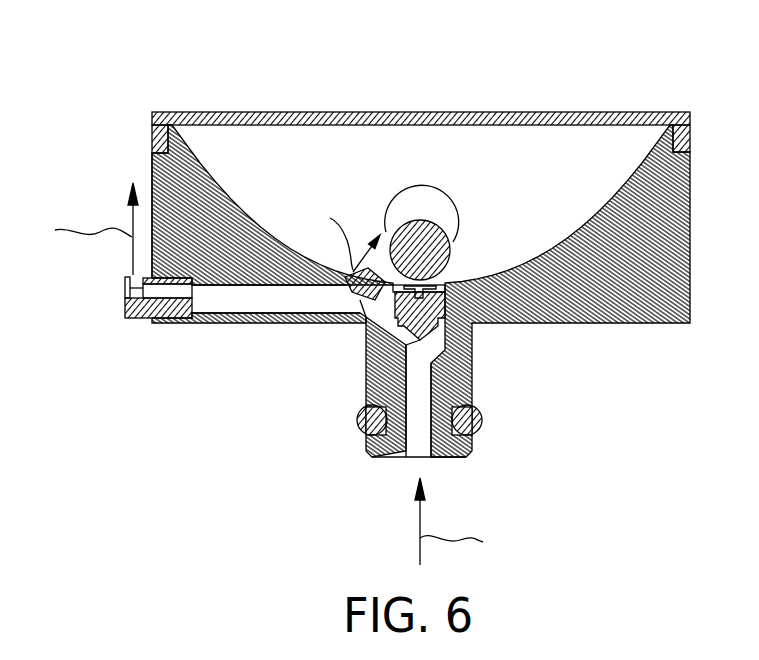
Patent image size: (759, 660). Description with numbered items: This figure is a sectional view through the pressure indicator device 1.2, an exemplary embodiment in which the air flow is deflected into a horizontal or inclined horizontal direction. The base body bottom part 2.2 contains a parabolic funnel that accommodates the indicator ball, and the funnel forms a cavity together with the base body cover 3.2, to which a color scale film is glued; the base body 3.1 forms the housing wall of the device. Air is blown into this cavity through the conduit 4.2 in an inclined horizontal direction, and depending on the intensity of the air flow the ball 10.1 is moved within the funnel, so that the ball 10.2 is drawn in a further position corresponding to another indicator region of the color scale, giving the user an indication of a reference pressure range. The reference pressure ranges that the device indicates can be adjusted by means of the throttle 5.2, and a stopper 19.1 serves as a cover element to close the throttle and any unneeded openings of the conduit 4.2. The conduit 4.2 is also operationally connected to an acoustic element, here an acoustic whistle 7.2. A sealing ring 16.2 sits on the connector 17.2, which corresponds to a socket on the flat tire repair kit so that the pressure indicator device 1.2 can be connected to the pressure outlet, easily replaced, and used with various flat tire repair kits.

The pressure indicator device 1.2 is at (183, 400).
The base body bottom part 2.2 is at (163, 167).
The housing body 3.1 is at (227, 190).
The base body cover 3.2 is at (198, 112).
The conduit 4.2 is at (282, 297).
The throttle 5.2 is at (455, 322).
The acoustic whistle 7.2 is at (125, 307).
The ball 10.1 is at (448, 262).
The ball 10.2 is at (432, 215).
The sealing ring 16.2 is at (483, 430).
The connector 17.2 is at (368, 458).
The stopper 19.1 is at (458, 362).